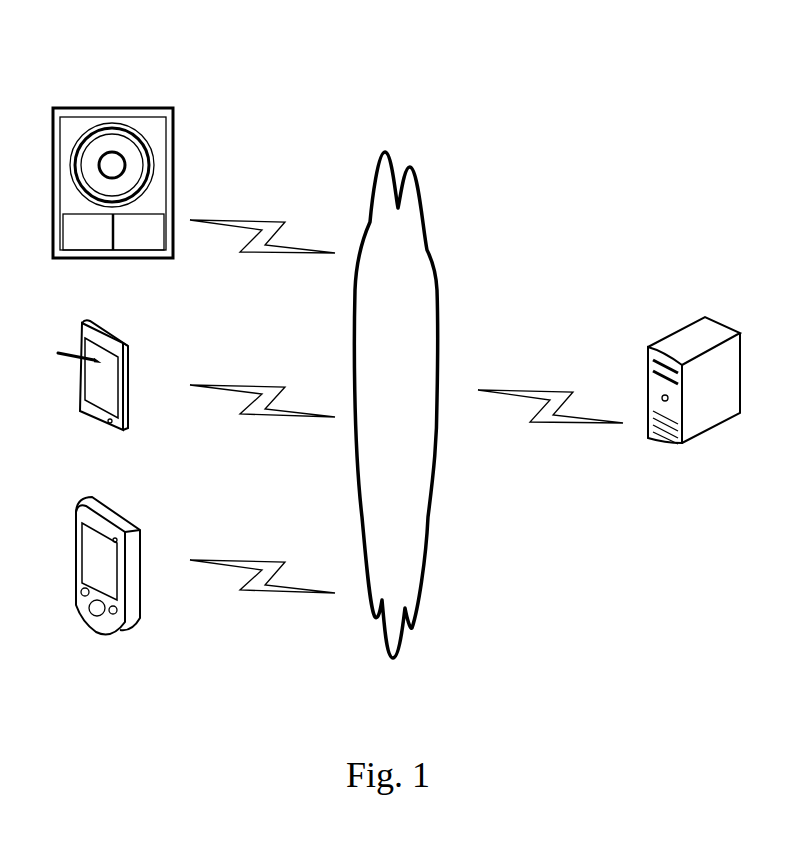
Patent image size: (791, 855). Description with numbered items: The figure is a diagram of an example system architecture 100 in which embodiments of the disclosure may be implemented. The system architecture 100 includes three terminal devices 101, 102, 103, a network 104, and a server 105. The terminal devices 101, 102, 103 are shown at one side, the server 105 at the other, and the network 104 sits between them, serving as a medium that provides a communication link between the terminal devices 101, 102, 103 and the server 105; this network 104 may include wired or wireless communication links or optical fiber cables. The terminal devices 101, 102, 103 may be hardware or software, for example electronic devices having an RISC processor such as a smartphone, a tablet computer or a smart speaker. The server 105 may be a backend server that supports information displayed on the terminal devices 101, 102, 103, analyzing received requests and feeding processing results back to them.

The system architecture 100 is at (607, 60).
The terminal device 101 is at (108, 584).
The terminal device 102 is at (93, 395).
The terminal device 103 is at (113, 203).
The network 104 is at (395, 405).
The server 105 is at (694, 403).